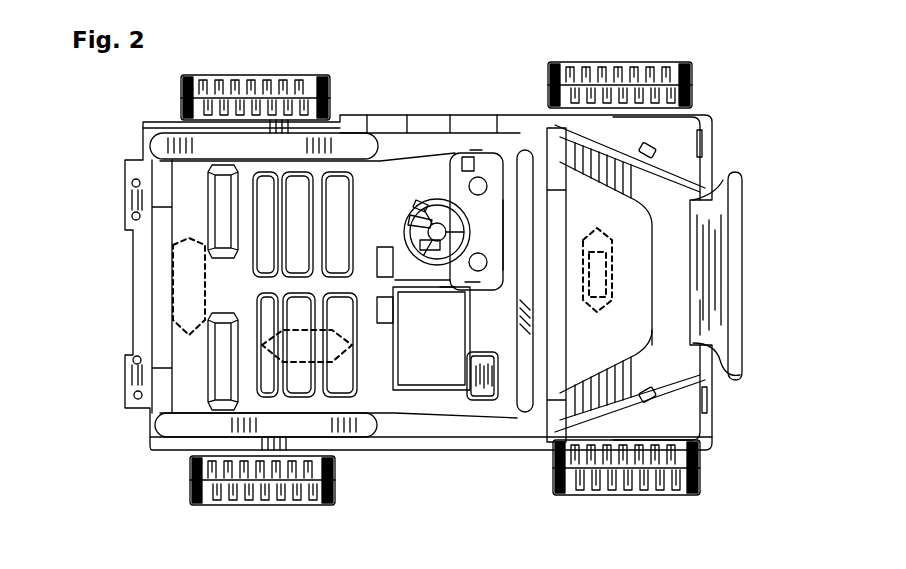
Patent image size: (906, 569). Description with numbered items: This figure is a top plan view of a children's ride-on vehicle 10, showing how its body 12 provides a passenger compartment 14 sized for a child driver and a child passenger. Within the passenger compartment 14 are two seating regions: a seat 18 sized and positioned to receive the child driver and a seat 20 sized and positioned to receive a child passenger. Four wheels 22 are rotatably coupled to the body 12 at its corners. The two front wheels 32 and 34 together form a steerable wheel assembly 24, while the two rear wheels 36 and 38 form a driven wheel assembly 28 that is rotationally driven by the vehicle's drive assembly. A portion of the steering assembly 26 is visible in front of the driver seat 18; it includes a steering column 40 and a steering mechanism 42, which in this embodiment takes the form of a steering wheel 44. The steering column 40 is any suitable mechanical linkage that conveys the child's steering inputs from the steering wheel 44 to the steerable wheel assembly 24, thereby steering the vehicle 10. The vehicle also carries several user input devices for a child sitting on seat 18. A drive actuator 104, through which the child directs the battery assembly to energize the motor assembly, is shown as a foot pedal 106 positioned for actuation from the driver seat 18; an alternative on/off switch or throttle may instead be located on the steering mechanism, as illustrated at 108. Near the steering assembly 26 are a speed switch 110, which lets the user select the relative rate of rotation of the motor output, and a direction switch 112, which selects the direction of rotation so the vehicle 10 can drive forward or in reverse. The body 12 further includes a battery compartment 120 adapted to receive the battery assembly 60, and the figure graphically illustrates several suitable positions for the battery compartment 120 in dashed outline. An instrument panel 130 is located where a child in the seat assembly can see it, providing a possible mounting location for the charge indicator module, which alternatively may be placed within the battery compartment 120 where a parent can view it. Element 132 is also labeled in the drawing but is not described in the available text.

The children's ride-on vehicle 10 is at (443, 285).
The body 12 is at (745, 238).
The passenger compartment 14 is at (418, 282).
The seat 18 is at (222, 185).
The seat 20 is at (225, 350).
The wheels 22 is at (429, 285).
The steerable wheel assembly 24 is at (633, 280).
The steering assembly 26 is at (494, 243).
The driven wheel assembly 28 is at (261, 290).
The front wheel 32 is at (583, 70).
The front wheel 34 is at (625, 485).
The rear wheel 36 is at (208, 75).
The rear wheel 38 is at (261, 495).
The steering column 40 is at (428, 186).
The steering mechanism 42 is at (412, 283).
The steering wheel 44 is at (447, 295).
The battery assembly 60 is at (610, 258).
The drive actuator 104 is at (406, 219).
The foot pedal 106 is at (418, 246).
The on/off switch or throttle 108 is at (417, 202).
The speed switch 110 is at (463, 150).
The direction switch 112 is at (476, 150).
The battery compartment 120 is at (180, 335).
The instrument panel 130 is at (475, 283).
The hood 132 is at (655, 345).